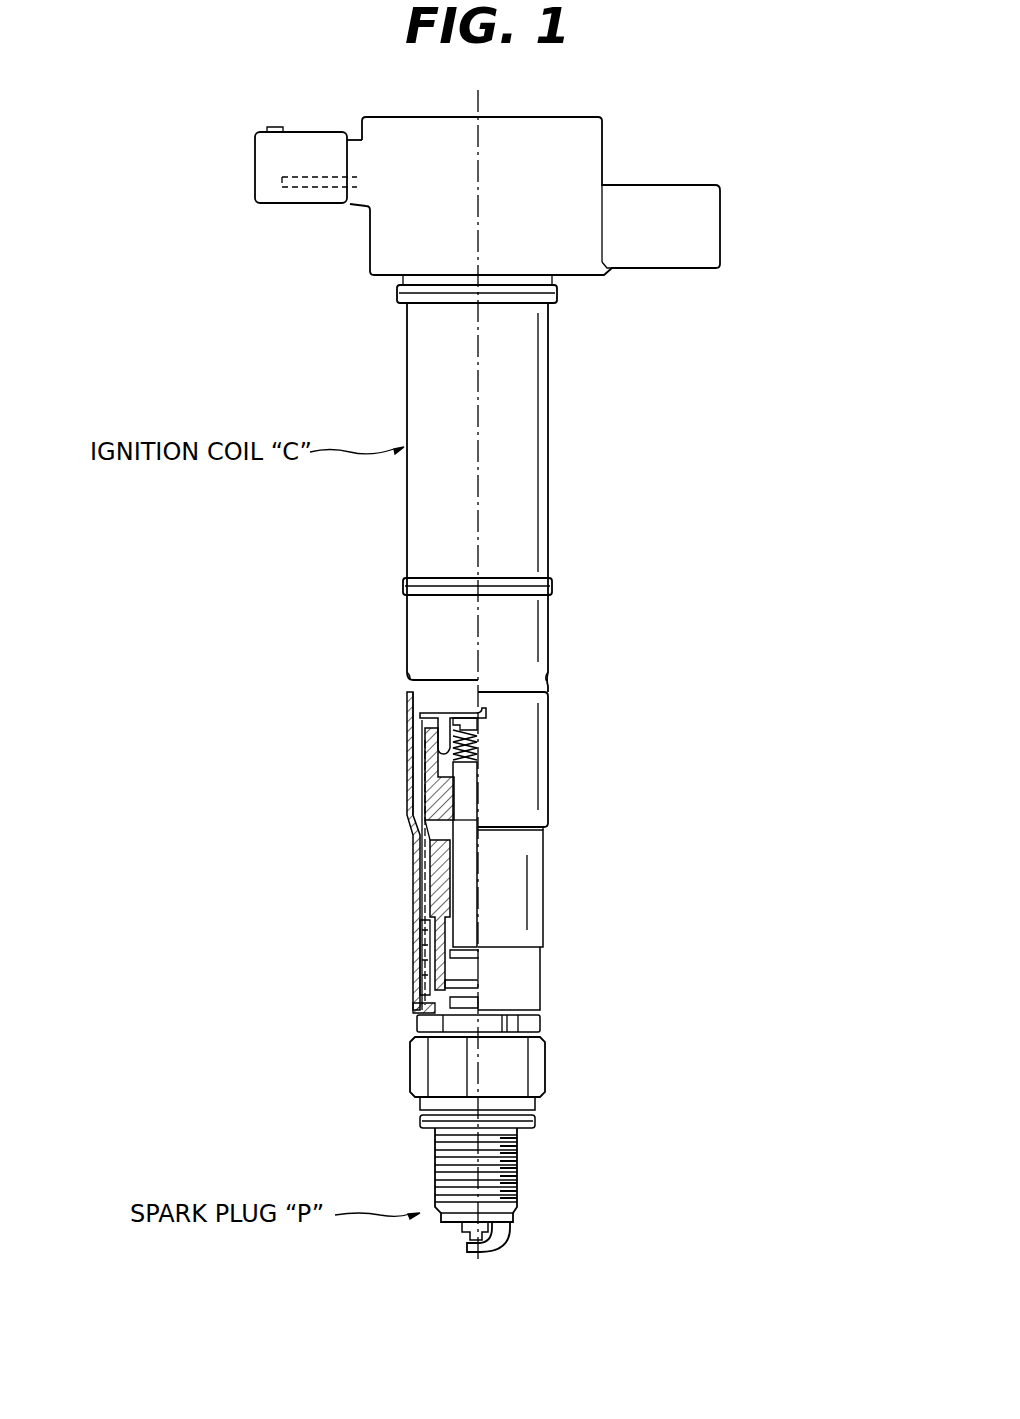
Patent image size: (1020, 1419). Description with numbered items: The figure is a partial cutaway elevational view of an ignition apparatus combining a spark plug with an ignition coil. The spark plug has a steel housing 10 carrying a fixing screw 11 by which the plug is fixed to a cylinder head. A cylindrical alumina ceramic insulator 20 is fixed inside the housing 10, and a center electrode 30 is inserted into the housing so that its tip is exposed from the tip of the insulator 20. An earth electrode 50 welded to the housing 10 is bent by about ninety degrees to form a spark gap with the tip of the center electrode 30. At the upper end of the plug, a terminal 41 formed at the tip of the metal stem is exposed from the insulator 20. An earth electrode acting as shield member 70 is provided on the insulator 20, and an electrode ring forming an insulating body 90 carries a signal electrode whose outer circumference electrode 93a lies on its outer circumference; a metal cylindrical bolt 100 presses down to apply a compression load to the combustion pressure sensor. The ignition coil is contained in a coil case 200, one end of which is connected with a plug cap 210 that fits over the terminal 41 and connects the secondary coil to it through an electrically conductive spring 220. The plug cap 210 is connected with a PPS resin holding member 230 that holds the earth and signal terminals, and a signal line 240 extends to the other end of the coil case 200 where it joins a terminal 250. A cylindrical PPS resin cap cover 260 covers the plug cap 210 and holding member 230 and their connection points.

The terminal 250 is at (296, 190).
The coil case 200 is at (528, 443).
The cap cover 260 is at (406, 727).
The electrically conductive spring 220 is at (475, 733).
The terminal 41 is at (475, 787).
The plug cap 210 is at (410, 829).
The signal line 240 is at (418, 862).
The holding member 230 is at (416, 937).
The insulator 20 is at (465, 897).
The earth electrode (shield member) 70 is at (465, 967).
The outer circumference electrode 93a is at (465, 998).
The metal cylindrical bolt 100 is at (540, 1022).
The electrode ring (insulating body) 90 is at (413, 1018).
The housing 10 is at (435, 1150).
The fixing screw 11 is at (518, 1165).
The center electrode 30 is at (472, 1237).
The earth electrode 50 is at (497, 1252).